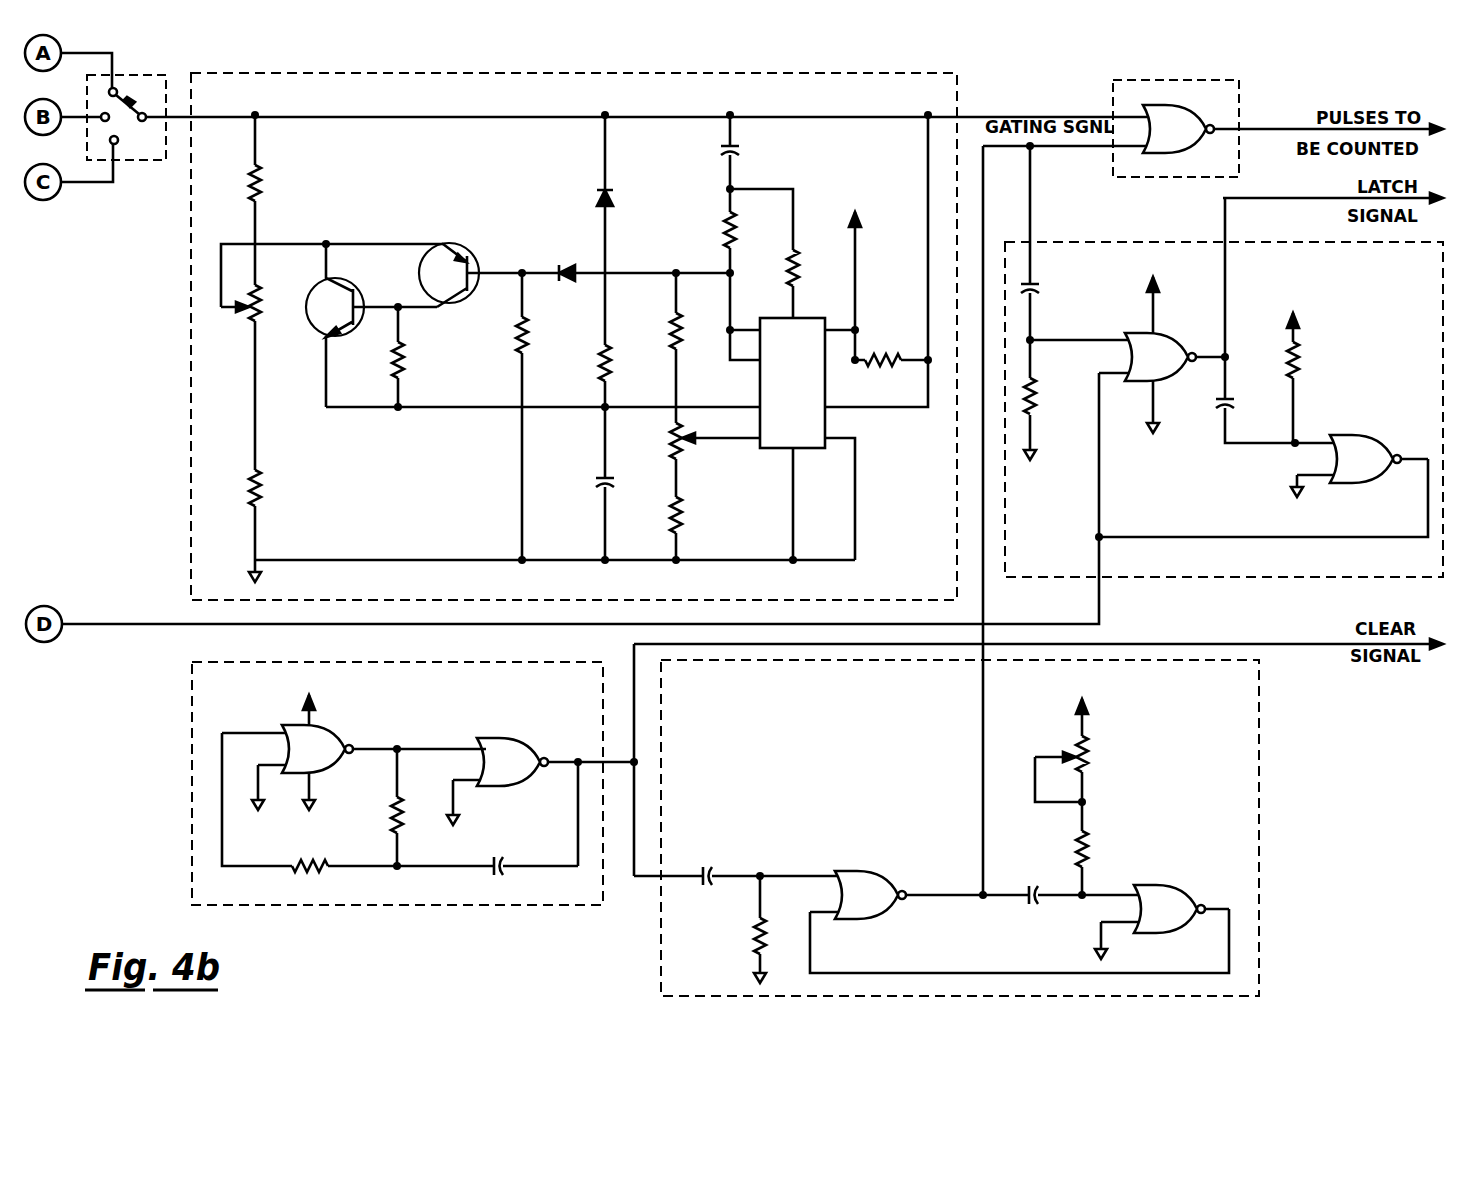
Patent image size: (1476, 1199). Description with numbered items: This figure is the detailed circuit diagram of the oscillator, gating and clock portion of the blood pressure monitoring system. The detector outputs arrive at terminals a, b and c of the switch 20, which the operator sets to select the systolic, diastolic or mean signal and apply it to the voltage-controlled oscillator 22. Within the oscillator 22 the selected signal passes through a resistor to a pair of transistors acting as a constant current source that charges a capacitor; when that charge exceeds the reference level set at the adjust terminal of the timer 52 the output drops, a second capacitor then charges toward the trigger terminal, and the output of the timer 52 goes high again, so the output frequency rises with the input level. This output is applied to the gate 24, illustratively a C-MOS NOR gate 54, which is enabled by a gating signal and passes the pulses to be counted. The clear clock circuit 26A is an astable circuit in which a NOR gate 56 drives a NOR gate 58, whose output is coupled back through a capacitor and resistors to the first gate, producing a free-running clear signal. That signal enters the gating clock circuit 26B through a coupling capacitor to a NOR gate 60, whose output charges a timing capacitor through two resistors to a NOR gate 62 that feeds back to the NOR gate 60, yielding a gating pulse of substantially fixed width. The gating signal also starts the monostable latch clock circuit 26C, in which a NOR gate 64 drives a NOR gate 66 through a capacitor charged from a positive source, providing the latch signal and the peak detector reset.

The switch 20 is at (128, 73).
The voltage-controlled oscillator 22 is at (697, 73).
The gate 24 is at (1226, 80).
The clear clock circuit 26A is at (192, 740).
The gating clock circuit 26B is at (661, 956).
The latch clock circuit 26C is at (1163, 242).
The timer 52 is at (780, 452).
The NOR gate 54 is at (1170, 108).
The NOR gate 56 is at (312, 770).
The NOR gate 58 is at (505, 740).
The NOR gate 60 is at (858, 871).
The NOR gate 62 is at (1158, 887).
The NOR gate 64 is at (1163, 383).
The NOR gate 66 is at (1352, 436).